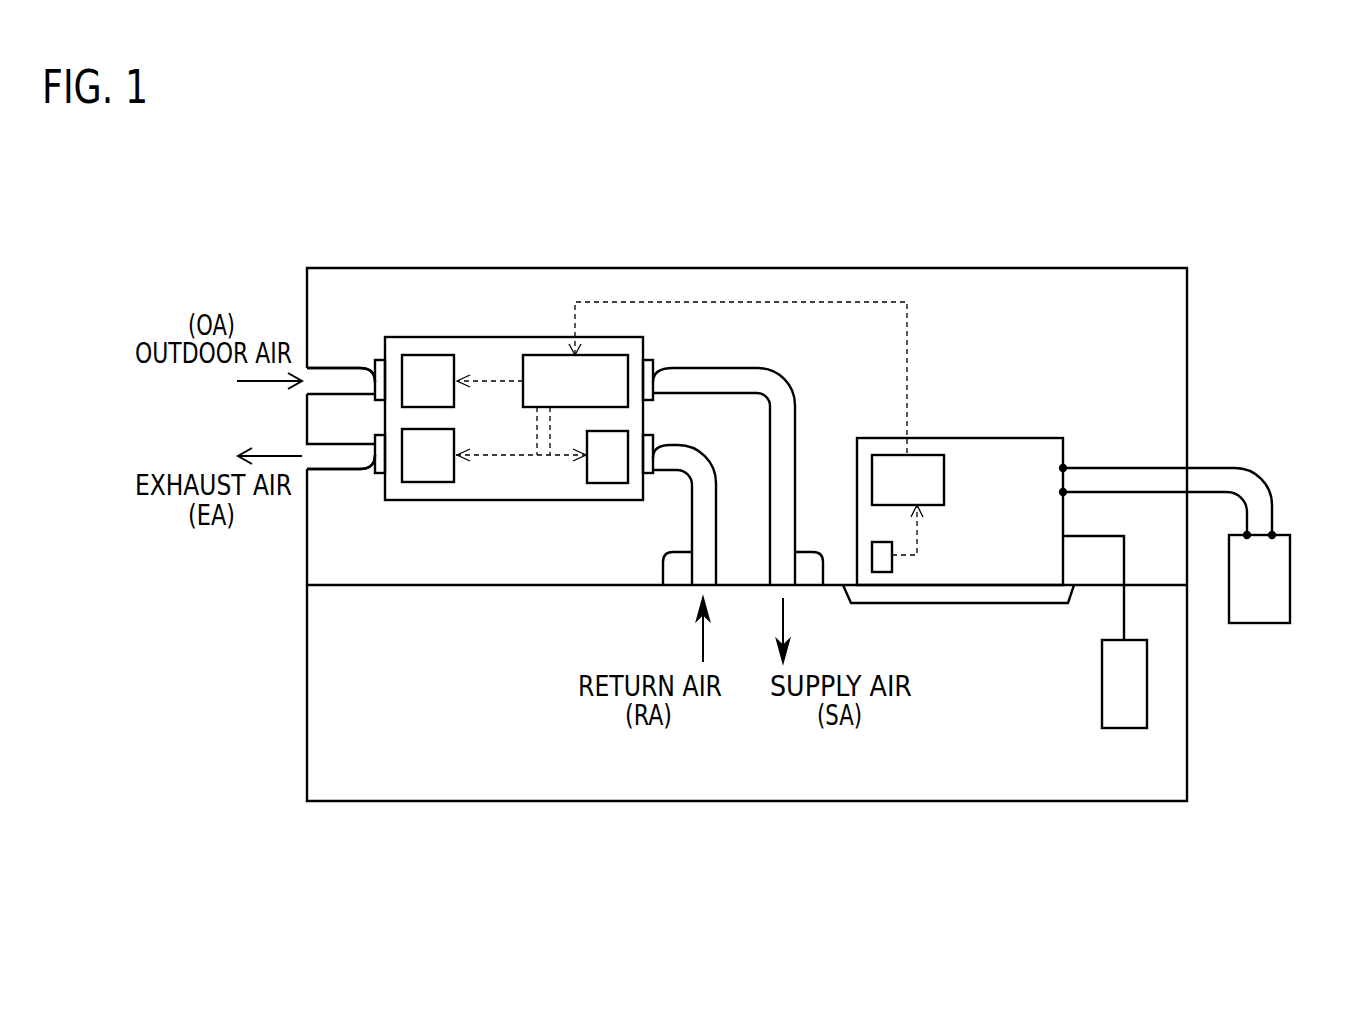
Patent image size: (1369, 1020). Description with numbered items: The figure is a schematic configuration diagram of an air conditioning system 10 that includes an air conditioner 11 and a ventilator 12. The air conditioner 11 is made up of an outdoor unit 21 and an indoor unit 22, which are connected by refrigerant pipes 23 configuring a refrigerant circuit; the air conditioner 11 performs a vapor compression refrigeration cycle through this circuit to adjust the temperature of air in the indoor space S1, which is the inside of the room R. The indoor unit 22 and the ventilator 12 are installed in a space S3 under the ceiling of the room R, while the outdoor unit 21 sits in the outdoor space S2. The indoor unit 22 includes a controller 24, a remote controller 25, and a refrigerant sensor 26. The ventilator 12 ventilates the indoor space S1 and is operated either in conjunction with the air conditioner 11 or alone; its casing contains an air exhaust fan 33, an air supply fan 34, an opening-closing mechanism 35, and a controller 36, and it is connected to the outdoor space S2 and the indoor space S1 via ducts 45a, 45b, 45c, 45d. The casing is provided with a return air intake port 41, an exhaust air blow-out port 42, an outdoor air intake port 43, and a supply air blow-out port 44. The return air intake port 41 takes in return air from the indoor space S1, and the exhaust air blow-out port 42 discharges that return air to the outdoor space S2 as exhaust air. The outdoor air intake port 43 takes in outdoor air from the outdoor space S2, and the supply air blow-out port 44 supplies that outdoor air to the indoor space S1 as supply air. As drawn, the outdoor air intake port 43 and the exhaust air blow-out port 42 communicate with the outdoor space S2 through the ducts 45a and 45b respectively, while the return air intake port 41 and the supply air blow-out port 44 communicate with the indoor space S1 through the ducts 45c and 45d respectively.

The air conditioning system 10 is at (1016, 296).
The air conditioner 11 is at (1029, 422).
The ventilator 12 is at (500, 322).
The outdoor unit 21 is at (1290, 580).
The indoor unit 22 is at (964, 437).
The refrigerant pipes 23 is at (1148, 492).
The controller 24 is at (944, 480).
The remote controller 25 is at (1100, 685).
The refrigerant sensor 26 is at (892, 565).
The air exhaust fan 33 is at (440, 482).
The air supply fan 34 is at (440, 355).
The opening-closing mechanism 35 is at (593, 483).
The controller 36 is at (541, 355).
The return air intake port 41 is at (655, 465).
The exhaust air blow-out port 42 is at (363, 463).
The outdoor air intake port 43 is at (363, 374).
The supply air blow-out port 44 is at (656, 382).
The duct 45a is at (338, 368).
The duct 45b is at (338, 469).
The duct 45c is at (663, 585).
The duct 45d is at (823, 585).
The room R is at (307, 634).
The indoor space S1 is at (453, 720).
The outdoor space S2 is at (135, 635).
The space under ceiling S3 is at (1160, 316).